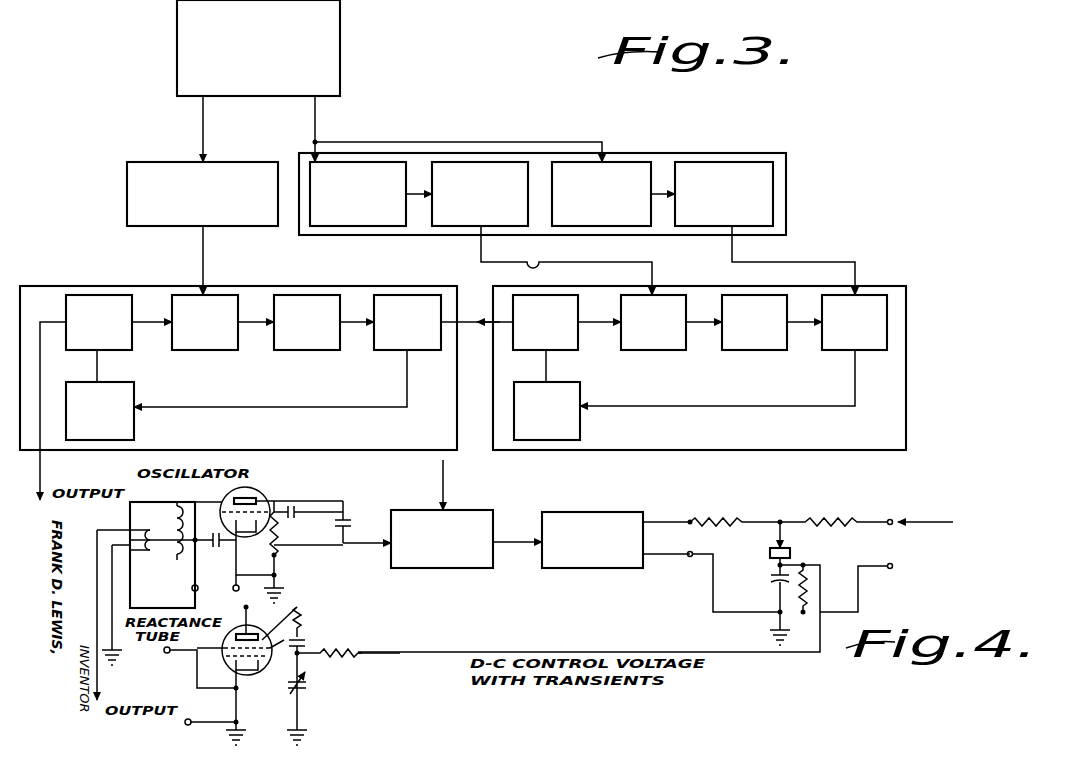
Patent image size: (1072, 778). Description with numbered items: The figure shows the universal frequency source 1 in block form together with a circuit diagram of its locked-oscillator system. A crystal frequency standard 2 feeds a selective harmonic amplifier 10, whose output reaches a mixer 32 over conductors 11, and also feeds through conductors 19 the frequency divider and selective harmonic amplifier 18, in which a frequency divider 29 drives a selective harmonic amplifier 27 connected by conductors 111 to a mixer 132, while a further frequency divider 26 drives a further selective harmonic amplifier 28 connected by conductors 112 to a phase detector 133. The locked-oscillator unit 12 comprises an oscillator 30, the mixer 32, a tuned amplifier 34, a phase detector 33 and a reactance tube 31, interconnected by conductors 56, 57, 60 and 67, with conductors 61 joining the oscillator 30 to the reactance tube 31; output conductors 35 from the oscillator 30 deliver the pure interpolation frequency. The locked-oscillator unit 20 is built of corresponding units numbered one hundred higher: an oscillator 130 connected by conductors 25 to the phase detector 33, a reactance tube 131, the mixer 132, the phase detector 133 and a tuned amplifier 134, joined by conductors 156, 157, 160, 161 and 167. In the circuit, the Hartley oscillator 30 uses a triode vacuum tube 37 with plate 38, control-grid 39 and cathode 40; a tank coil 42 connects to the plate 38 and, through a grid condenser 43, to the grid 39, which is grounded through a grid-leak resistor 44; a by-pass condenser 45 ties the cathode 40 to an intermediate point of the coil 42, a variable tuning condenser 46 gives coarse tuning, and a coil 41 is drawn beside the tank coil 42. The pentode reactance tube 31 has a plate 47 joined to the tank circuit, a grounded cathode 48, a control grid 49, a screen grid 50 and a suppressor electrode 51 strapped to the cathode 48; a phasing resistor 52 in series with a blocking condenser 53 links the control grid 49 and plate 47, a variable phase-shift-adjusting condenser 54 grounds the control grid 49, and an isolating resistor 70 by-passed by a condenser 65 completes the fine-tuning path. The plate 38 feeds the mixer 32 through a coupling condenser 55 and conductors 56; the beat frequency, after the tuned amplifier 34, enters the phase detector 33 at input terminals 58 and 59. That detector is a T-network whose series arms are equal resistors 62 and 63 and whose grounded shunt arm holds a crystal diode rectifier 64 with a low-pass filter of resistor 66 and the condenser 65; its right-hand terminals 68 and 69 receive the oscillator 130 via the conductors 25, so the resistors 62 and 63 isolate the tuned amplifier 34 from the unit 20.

In FIG. 3, the frequency synthesizer system 1 is at (96, 0).
In FIG. 3, the crystal frequency standard 2 is at (340, 70).
In FIG. 3, the selective harmonic amplifier 10 is at (150, 170).
In FIG. 4, the selective harmonic amplifier 10 is at (549, 488).
In FIG. 3, the output lead of selective harmonic amplifier 11 is at (203, 253).
In FIG. 4, the output lead of selective harmonic amplifier 11 is at (443, 487).
In FIG. 3, the locked-oscillator unit 12 is at (143, 305).
In FIG. 3, the frequency divider and selective harmonic amplifier 18 is at (553, 165).
In FIG. 3, the conductors 19 is at (315, 120).
In FIG. 3, the locked-oscillator unit 20 is at (898, 295).
In FIG. 3, the conductors 25 is at (478, 320).
In FIG. 4, the conductors 25 is at (932, 528).
In FIG. 3, the further frequency divider 26 is at (630, 162).
In FIG. 3, the selective harmonic amplifier 27 is at (490, 165).
In FIG. 3, the further selective harmonic amplifier 28 is at (752, 165).
In FIG. 3, the frequency divider 29 is at (372, 168).
In FIG. 3, the oscillator 30 is at (88, 300).
In FIG. 4, the oscillator 30 is at (262, 490).
In FIG. 3, the reactance tube 31 is at (132, 398).
In FIG. 4, the reactance tube 31 is at (220, 650).
In FIG. 3, the mixer 32 is at (218, 308).
In FIG. 4, the mixer 32 is at (455, 568).
In FIG. 3, the phase detector 33 is at (410, 300).
In FIG. 4, the phase detector 33 is at (848, 501).
In FIG. 3, the tuned amplifier 34 is at (320, 300).
In FIG. 4, the tuned amplifier 34 is at (598, 568).
In FIG. 3, the output conductors 35 is at (40, 462).
In FIG. 4, the output conductors 35 is at (97, 615).
In FIG. 4, the triode vacuum tube 37 is at (272, 500).
In FIG. 4, the plate 38 is at (230, 497).
In FIG. 4, the control-grid 39 is at (300, 508).
In FIG. 4, the cathode 40 is at (244, 572).
In FIG. 4, the output coil 41 is at (150, 560).
In FIG. 4, the tank coil 42 is at (165, 513).
In FIG. 4, the grid condenser 43 is at (280, 530).
In FIG. 4, the grid-leak resistor 44 is at (325, 545).
In FIG. 4, the by-pass condenser 45 is at (215, 550).
In FIG. 4, the variable tuning condenser 46 is at (130, 518).
In FIG. 4, the plate 47 is at (252, 630).
In FIG. 4, the cathode 48 is at (247, 680).
In FIG. 4, the control grid 49 is at (193, 666).
In FIG. 4, the screen grid 50 is at (304, 642).
In FIG. 4, the suppressor electrode 51 is at (297, 607).
In FIG. 4, the phasing resistor 52 is at (300, 622).
In FIG. 4, the blocking condenser 53 is at (345, 643).
In FIG. 4, the variable reactance-tube phase-shift-adjusting condenser 54 is at (304, 688).
In FIG. 4, the coupling condenser 55 is at (352, 512).
In FIG. 3, the conductors 56 is at (154, 322).
In FIG. 4, the conductors 56 is at (362, 545).
In FIG. 3, the conductors 57 is at (256, 325).
In FIG. 4, the conductors 57 is at (518, 545).
In FIG. 4, the left-hand input terminal 58 is at (696, 508).
In FIG. 4, the left-hand input terminal 59 is at (690, 557).
In FIG. 3, the conductors 60 is at (358, 325).
In FIG. 4, the conductors 60 is at (665, 548).
In FIG. 3, the conductors 61 is at (97, 366).
In FIG. 4, the conductors 61 is at (130, 590).
In FIG. 4, the resistor 62 is at (718, 528).
In FIG. 4, the resistor 63 is at (828, 528).
In FIG. 4, the diode rectifier 64 is at (770, 555).
In FIG. 4, the by-pass condenser 65 is at (772, 580).
In FIG. 4, the resistor 66 is at (807, 590).
In FIG. 3, the conductors 67 is at (305, 407).
In FIG. 4, the conductors 67 is at (765, 652).
In FIG. 4, the right-hand input terminal 68 is at (890, 518).
In FIG. 4, the right-hand input terminal 69 is at (893, 566).
In FIG. 4, the isolating resistor 70 is at (370, 652).
In FIG. 3, the conductors 111 is at (548, 262).
In FIG. 3, the conductors 112 is at (774, 262).
In FIG. 3, the oscillator 130 is at (565, 300).
In FIG. 3, the reactance tube 131 is at (580, 386).
In FIG. 3, the mixer 132 is at (672, 300).
In FIG. 3, the phase detector 133 is at (870, 300).
In FIG. 3, the tuned amplifier 134 is at (772, 300).
In FIG. 3, the conductors 156 is at (605, 324).
In FIG. 3, the conductors 157 is at (700, 325).
In FIG. 3, the conductors 160 is at (800, 325).
In FIG. 3, the conductors 161 is at (546, 366).
In FIG. 3, the conductors 167 is at (730, 406).